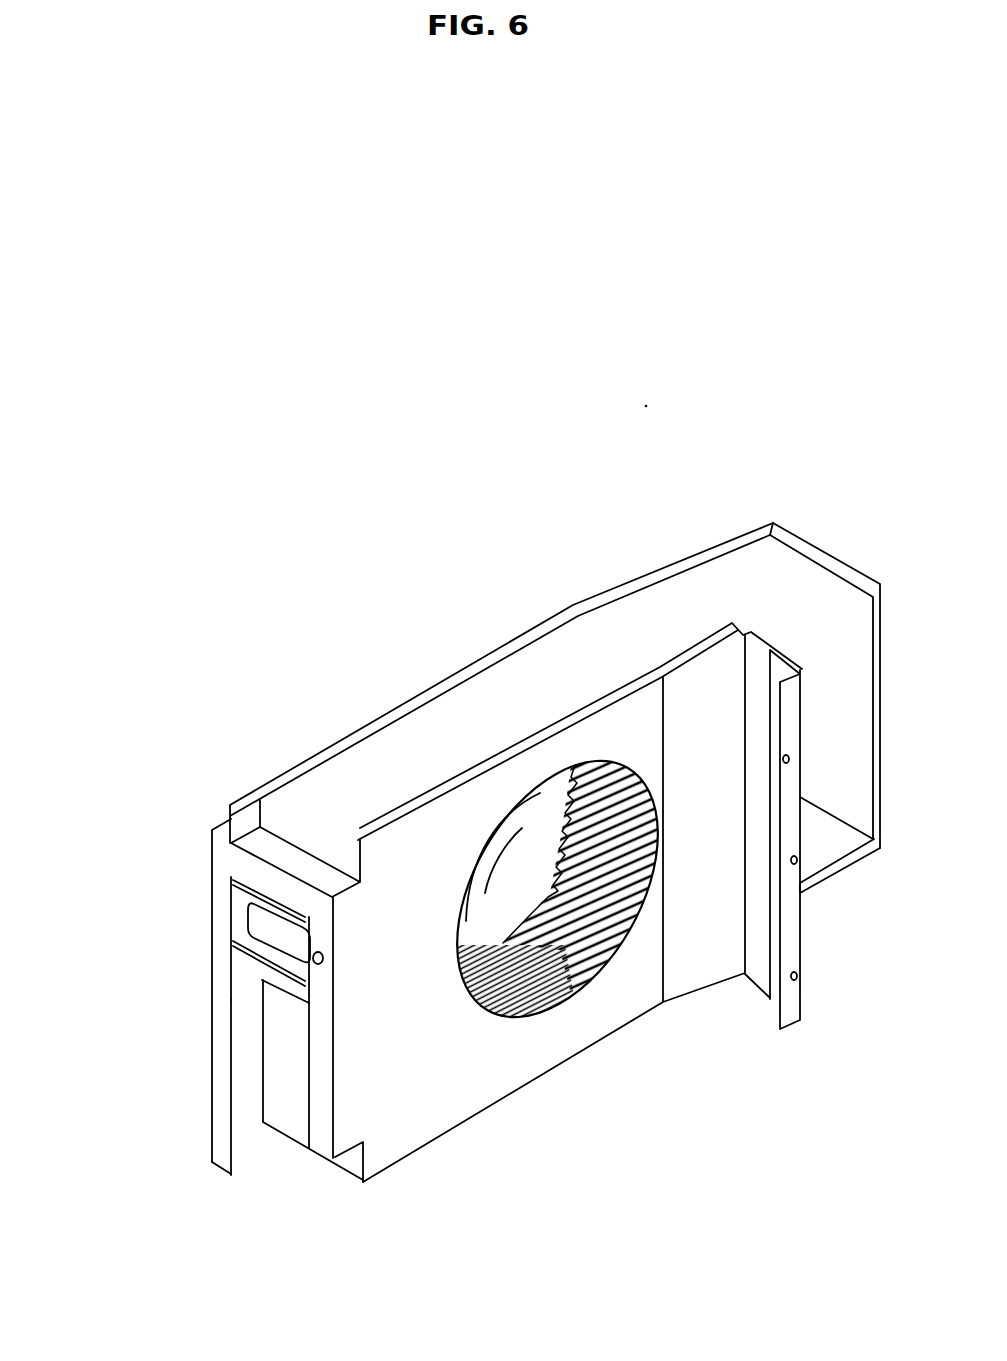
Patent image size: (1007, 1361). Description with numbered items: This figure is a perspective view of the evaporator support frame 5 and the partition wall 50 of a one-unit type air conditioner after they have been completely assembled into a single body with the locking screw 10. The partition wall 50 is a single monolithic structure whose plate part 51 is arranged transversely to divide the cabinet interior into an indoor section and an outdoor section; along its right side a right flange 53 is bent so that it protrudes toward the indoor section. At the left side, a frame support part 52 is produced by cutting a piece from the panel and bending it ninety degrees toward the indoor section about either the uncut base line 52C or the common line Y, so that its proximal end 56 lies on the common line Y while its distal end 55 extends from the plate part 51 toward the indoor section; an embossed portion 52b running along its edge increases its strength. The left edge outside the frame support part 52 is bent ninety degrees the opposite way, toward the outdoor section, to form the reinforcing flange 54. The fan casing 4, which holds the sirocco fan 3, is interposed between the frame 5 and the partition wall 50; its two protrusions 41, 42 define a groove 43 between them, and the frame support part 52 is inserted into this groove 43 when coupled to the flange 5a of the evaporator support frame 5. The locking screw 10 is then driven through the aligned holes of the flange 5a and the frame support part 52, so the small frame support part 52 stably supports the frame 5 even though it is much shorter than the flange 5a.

The sirocco fan 3 is at (587, 978).
The fan casing 4 is at (655, 605).
The evaporator support frame 5 is at (443, 1097).
The flange 5a is at (323, 1113).
The locking screw 10 is at (298, 988).
The protrusion 41 is at (243, 862).
The protrusion 42 is at (265, 990).
The groove 43 is at (300, 928).
The partition wall 50 is at (425, 680).
The plate part 51 is at (513, 641).
The frame support part 52 is at (243, 900).
The embossed portion 52b is at (240, 950).
The uncut base line 52C is at (222, 898).
The right flange 53 is at (826, 549).
The reinforcing flange 54 is at (222, 1105).
The distal end 55 is at (328, 953).
The proximal end 56 is at (240, 927).
The common line Y is at (233, 1163).